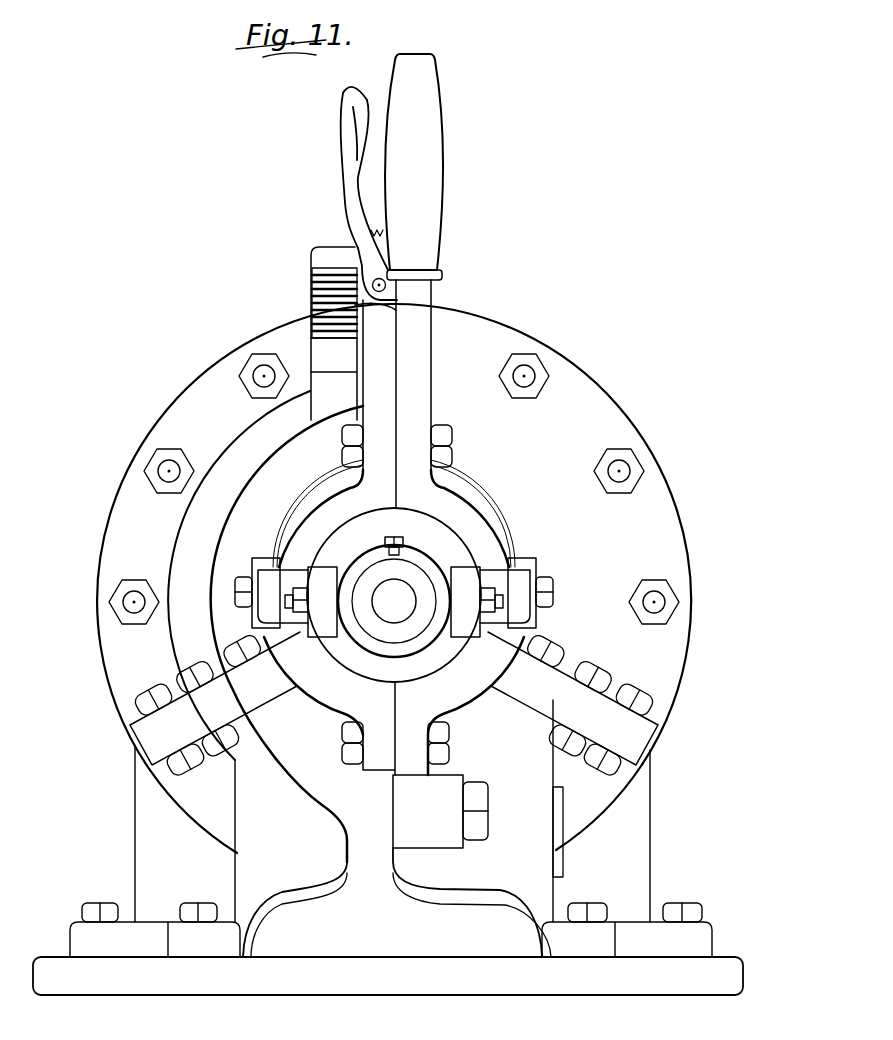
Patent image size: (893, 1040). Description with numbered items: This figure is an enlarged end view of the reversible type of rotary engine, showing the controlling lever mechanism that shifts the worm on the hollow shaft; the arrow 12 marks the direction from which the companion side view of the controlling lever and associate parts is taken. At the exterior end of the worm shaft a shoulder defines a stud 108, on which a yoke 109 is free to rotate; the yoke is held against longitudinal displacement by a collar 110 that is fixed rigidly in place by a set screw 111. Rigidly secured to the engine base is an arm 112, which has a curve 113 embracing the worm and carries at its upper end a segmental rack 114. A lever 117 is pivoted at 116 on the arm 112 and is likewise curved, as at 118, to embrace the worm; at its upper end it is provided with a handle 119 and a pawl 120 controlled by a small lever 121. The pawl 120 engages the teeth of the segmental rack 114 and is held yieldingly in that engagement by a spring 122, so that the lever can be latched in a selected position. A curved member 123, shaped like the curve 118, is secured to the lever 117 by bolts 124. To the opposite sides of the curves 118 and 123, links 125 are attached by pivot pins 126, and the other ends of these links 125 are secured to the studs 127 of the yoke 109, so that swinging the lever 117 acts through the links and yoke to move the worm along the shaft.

The arrow 12 is at (686, 391).
The stud 108 is at (394, 601).
The yoke 109 is at (428, 548).
The collar 110 is at (420, 577).
The set screw 111 is at (393, 537).
The arm 112 is at (360, 847).
The curve 113 is at (183, 535).
The segmental rack 114 is at (312, 287).
The pivot 116 is at (478, 812).
The lever 117 is at (420, 303).
The curve 118 is at (493, 547).
The handle 119 is at (443, 150).
The pawl 120 is at (327, 252).
The lever 121 is at (342, 155).
The spring 122 is at (383, 233).
The curved member 123 is at (307, 506).
The bolts 124 is at (443, 436).
The links 125 is at (268, 567).
The pivot pins 126 is at (243, 588).
The studs 127 is at (278, 600).